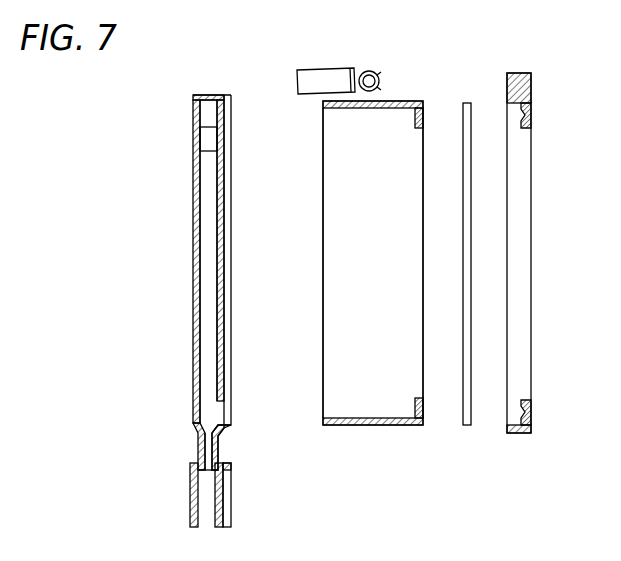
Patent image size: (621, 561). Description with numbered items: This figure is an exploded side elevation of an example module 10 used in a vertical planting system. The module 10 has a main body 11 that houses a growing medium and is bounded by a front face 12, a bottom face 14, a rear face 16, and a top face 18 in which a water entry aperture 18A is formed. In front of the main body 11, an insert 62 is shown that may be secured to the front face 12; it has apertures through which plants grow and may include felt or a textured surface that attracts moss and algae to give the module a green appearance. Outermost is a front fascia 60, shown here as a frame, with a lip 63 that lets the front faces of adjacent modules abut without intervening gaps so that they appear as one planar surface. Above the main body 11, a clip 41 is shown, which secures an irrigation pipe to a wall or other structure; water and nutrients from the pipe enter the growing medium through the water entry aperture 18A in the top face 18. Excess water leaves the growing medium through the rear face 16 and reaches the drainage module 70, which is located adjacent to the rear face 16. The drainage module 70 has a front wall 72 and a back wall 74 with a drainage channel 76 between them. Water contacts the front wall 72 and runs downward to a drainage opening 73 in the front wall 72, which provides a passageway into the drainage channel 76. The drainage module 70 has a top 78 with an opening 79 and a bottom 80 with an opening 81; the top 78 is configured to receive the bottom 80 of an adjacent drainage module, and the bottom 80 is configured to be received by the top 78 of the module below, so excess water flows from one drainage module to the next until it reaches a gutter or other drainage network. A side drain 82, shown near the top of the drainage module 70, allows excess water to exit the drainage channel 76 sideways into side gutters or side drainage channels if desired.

The module 10 is at (480, 28).
The main body 11 is at (338, 200).
The front face 12 is at (423, 212).
The bottom face 14 is at (372, 427).
The rear face 16 is at (323, 346).
The top face 18 is at (407, 100).
The water entry aperture 18A is at (384, 101).
The clip 41 is at (360, 69).
The front fascia 60 is at (531, 252).
The insert 62 is at (467, 413).
The lip 63 is at (532, 88).
The drainage module 70 is at (226, 497).
The front wall 72 is at (231, 265).
The drainage opening 73 is at (218, 410).
The back wall 74 is at (193, 260).
The drainage channel 76 is at (207, 222).
The top 78 is at (193, 100).
The opening 79 is at (207, 100).
The bottom 80 is at (218, 445).
The opening 81 is at (210, 470).
The side drain 82 is at (208, 139).